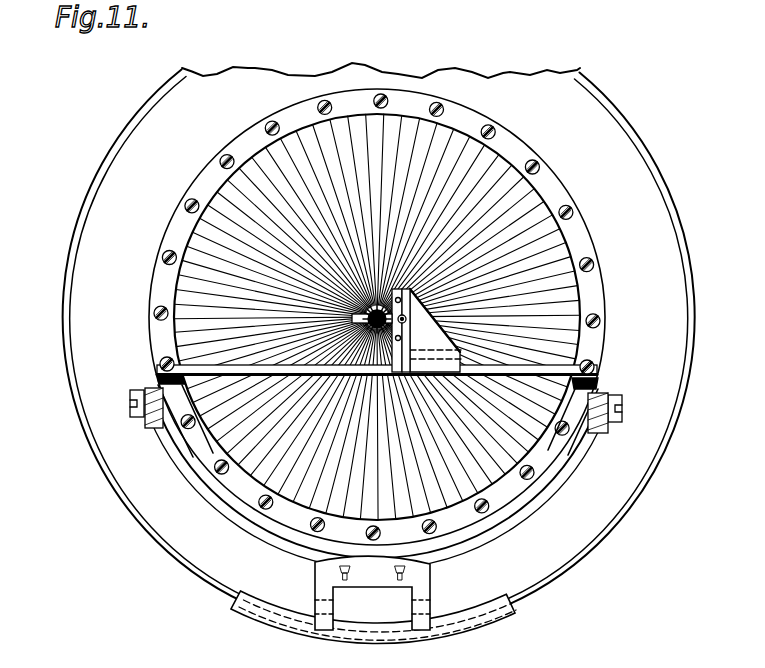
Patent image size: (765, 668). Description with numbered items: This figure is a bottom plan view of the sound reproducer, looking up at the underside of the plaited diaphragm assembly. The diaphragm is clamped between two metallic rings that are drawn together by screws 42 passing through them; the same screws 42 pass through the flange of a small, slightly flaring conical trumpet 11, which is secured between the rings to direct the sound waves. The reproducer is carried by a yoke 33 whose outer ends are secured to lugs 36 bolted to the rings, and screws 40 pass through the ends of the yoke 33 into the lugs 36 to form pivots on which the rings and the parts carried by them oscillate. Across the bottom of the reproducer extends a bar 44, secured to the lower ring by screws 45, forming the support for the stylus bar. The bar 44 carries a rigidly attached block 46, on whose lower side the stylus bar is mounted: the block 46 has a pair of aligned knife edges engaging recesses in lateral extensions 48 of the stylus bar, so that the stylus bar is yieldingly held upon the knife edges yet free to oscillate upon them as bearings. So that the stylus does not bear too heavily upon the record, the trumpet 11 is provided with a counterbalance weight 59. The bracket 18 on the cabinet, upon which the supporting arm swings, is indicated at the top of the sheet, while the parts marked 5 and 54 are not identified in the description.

The ring 5 is at (517, 188).
The trumpet 11 is at (638, 184).
The yoke 33 is at (567, 476).
The lug 36 is at (590, 428).
The screw 40 is at (624, 405).
The screw 42 is at (266, 127).
The bar 44 is at (548, 366).
The screw 45 is at (596, 368).
The block 46 is at (412, 300).
The lateral extension 48 is at (410, 280).
The counterbalance-weight 59 is at (292, 625).
The bracket 18 is at (295, 6).
The fragment 54 is at (389, 8).